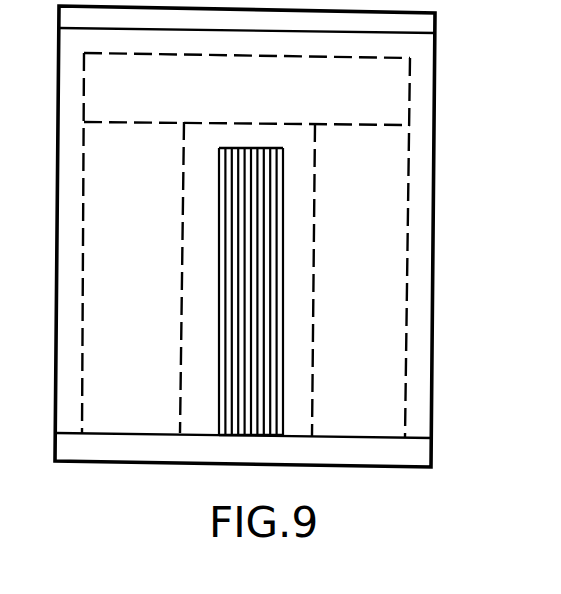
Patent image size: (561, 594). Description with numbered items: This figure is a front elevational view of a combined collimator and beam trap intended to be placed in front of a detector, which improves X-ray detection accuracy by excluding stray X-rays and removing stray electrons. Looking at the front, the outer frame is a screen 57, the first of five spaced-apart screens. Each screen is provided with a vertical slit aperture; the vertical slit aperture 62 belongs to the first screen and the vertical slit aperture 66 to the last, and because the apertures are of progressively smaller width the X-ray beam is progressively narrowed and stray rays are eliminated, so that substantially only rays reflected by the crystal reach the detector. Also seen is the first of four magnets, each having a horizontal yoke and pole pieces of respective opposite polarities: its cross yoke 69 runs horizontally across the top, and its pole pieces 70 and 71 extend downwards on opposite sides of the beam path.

The screen 57 is at (427, 112).
The cross yoke 69 is at (393, 87).
The pole piece 71 is at (95, 277).
The pole piece 70 is at (386, 332).
The vertical slit aperture 66 is at (253, 167).
The vertical slit aperture 62 is at (217, 422).